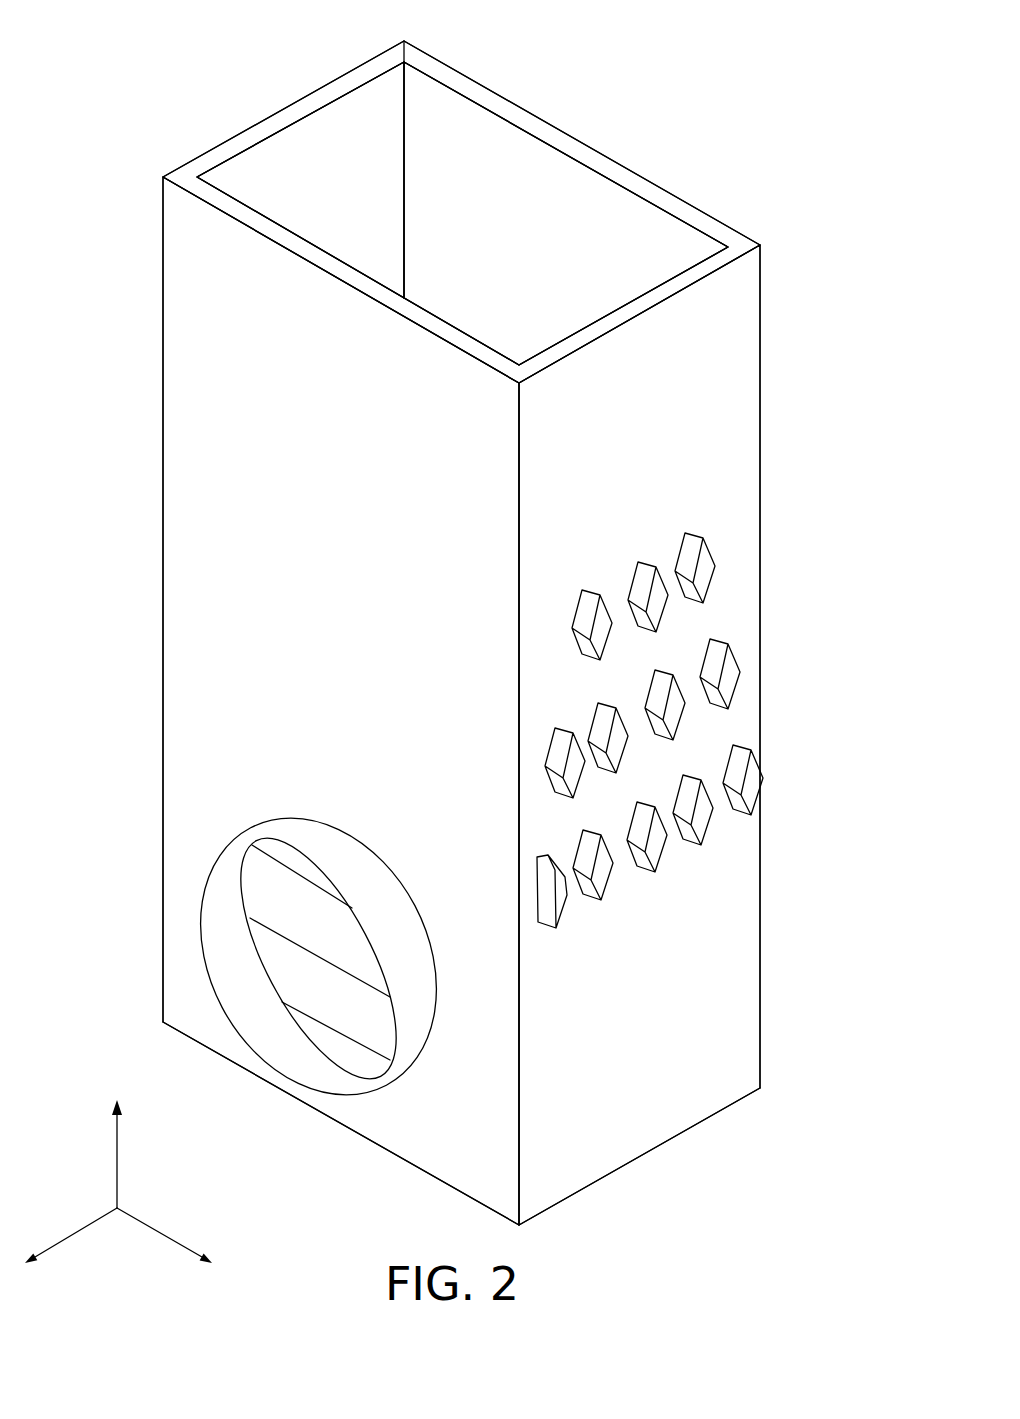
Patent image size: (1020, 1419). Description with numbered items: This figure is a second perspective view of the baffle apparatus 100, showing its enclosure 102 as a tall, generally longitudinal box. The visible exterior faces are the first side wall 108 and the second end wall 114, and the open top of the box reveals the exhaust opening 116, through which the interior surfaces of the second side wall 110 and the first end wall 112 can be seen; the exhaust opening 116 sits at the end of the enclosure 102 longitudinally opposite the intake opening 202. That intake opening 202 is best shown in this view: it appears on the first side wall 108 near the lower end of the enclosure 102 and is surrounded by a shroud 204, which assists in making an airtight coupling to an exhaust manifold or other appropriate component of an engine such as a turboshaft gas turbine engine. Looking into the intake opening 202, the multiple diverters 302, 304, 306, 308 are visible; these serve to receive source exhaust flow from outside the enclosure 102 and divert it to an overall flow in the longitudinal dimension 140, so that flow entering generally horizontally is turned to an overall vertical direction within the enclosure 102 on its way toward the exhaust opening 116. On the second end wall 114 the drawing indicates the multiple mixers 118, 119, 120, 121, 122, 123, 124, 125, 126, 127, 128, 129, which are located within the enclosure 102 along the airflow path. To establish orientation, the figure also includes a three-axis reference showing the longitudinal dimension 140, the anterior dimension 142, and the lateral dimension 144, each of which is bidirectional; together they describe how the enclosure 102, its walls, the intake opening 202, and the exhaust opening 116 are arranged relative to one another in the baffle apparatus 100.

The baffle apparatus 100 is at (140, 65).
The enclosure 102 is at (742, 214).
The first side wall 108 is at (325, 402).
The second side wall 110 is at (532, 224).
The first end wall 112 is at (309, 197).
The second end wall 114 is at (622, 407).
The exhaust opening 116 is at (496, 132).
The mixer 118 is at (691, 533).
The mixer 119 is at (643, 562).
The mixer 120 is at (590, 590).
The mixer 121 is at (737, 664).
The mixer 122 is at (676, 722).
The mixer 123 is at (623, 745).
The mixer 124 is at (560, 730).
The mixer 125 is at (753, 784).
The mixer 126 is at (698, 845).
The mixer 127 is at (651, 872).
The mixer 128 is at (598, 900).
The mixer 129 is at (548, 930).
The intake opening 202 is at (286, 955).
The shroud 204 is at (318, 825).
The diverter 302 is at (288, 862).
The diverter 304 is at (293, 910).
The diverter 306 is at (292, 965).
The diverter 308 is at (330, 1032).
The longitudinal dimension 140 is at (120, 1137).
The anterior dimension 142 is at (77, 1233).
The lateral dimension 144 is at (153, 1230).